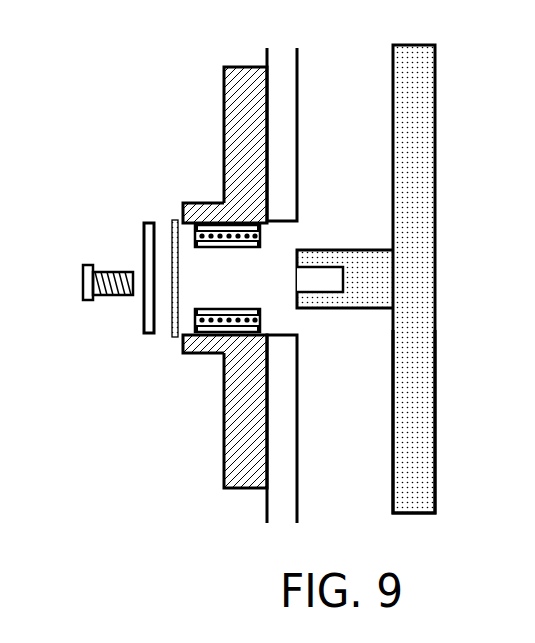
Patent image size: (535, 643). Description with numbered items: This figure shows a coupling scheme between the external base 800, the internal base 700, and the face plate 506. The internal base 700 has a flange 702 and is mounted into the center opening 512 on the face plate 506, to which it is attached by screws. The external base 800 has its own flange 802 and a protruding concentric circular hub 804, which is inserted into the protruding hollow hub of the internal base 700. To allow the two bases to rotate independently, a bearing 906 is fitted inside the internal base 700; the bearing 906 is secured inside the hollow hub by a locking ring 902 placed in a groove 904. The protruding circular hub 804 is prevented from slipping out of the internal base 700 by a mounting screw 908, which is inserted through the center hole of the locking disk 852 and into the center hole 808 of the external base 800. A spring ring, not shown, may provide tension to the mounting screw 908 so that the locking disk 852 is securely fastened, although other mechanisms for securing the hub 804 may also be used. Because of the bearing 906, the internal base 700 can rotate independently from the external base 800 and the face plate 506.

The face plate 506 is at (297, 123).
The center opening 512 is at (287, 240).
The internal base 700 is at (223, 110).
The flange 702 is at (223, 183).
The external base 800 is at (435, 105).
The flange 802 is at (435, 433).
The protruding concentric circular hub 804 is at (330, 252).
The center hole 808 is at (307, 280).
The locking disk 852 is at (152, 337).
The locking ring 902 is at (173, 340).
The groove 904 is at (190, 240).
The bearing 906 is at (220, 250).
The mounting screw 908 is at (121, 268).